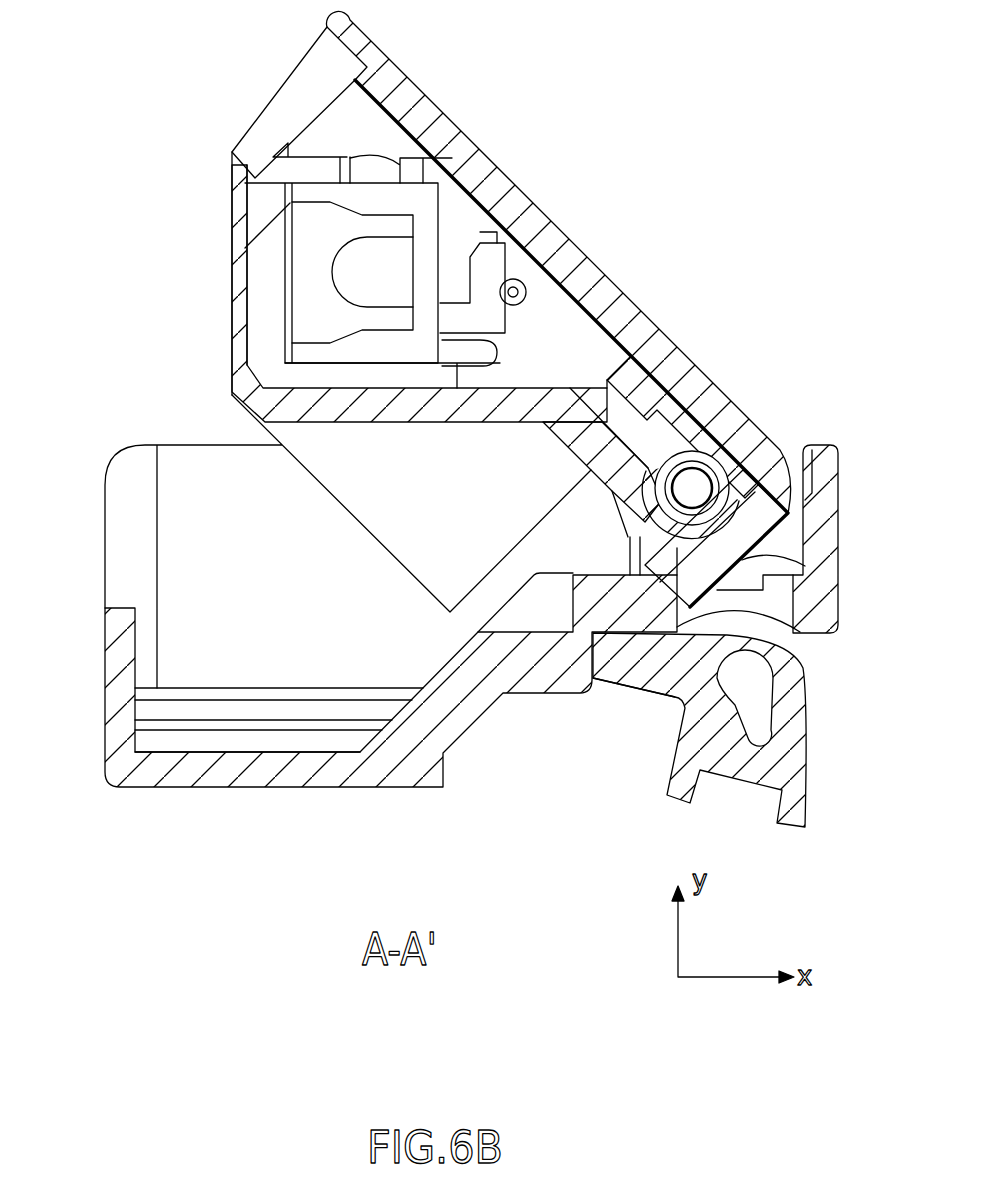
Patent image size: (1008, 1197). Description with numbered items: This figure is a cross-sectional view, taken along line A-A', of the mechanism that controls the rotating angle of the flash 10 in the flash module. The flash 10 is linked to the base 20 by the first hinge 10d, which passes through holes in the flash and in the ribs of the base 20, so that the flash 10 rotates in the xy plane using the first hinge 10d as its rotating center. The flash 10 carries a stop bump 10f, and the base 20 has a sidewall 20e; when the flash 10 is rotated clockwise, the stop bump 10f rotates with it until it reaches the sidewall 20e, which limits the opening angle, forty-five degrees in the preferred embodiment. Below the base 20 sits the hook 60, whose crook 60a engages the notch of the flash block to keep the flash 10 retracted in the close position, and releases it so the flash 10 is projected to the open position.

The flash 10 is at (281, 120).
The first hinge 10d is at (694, 487).
The stop bump 10f is at (760, 540).
The base 20 is at (120, 712).
The sidewall 20e is at (735, 620).
The hook 60 is at (798, 779).
The crook 60a is at (650, 682).